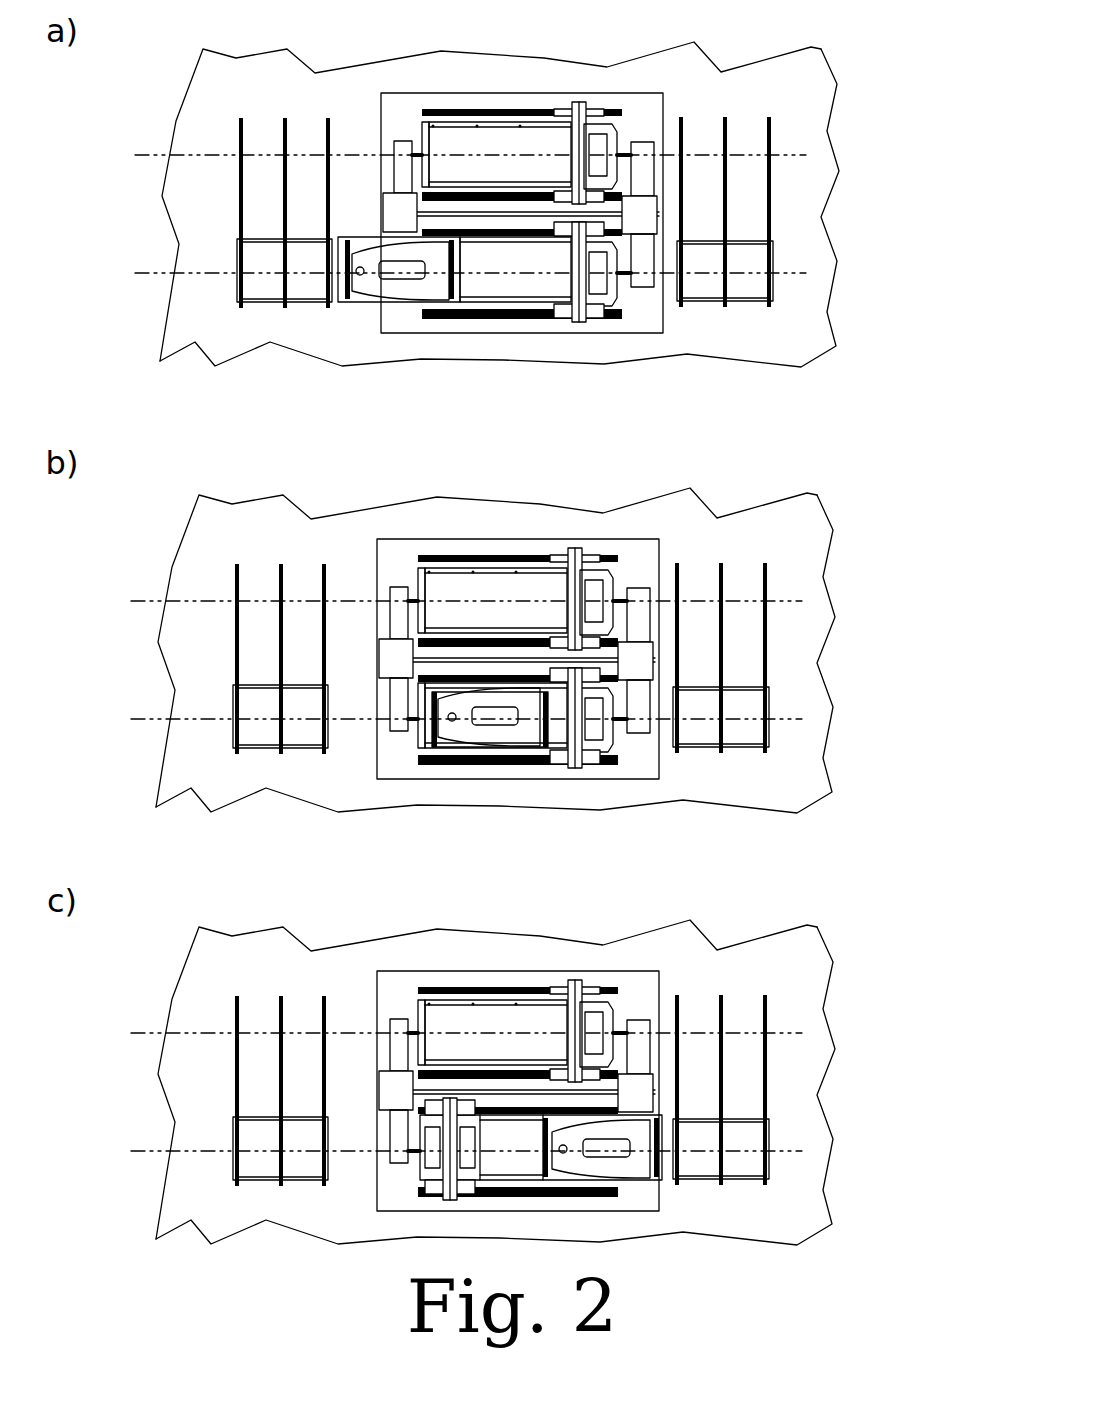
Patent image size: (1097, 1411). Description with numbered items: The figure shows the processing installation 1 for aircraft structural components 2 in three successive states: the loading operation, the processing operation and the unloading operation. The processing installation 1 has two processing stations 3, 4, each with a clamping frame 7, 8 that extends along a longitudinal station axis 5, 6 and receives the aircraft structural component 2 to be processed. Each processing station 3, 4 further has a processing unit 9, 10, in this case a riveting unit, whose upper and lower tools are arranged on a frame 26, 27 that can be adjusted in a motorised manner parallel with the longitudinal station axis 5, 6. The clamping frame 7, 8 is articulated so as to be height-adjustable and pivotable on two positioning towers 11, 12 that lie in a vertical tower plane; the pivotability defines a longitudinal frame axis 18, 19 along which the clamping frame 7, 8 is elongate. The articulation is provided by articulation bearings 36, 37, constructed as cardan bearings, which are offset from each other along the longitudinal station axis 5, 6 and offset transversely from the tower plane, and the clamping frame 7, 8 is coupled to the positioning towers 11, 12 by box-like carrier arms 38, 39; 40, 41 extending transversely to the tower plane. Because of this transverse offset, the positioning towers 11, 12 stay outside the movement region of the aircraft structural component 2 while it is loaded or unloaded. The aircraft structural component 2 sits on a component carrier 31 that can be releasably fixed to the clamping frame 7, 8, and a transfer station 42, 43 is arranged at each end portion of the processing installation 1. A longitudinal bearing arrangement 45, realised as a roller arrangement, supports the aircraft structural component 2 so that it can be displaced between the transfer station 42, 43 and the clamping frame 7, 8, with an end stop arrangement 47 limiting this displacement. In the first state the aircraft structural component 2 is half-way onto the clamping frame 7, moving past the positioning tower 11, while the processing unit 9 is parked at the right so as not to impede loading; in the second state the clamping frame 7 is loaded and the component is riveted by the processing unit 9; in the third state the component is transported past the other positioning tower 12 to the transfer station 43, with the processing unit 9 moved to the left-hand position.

The processing installation 1 is at (900, 479).
The aircraft structural component 2 is at (371, 736).
The processing station 3 is at (905, 677).
The processing station 4 is at (905, 563).
The longitudinal station axis 5 is at (62, 719).
The longitudinal station axis 6 is at (64, 601).
The clamping frame 7 is at (640, 727).
The clamping frame 8 is at (621, 580).
The processing unit 9 is at (575, 778).
The processing unit 10 is at (581, 538).
The positioning tower 11 is at (389, 655).
The positioning tower 12 is at (647, 655).
The longitudinal frame axis 18 is at (509, 716).
The longitudinal frame axis 19 is at (441, 601).
The frame 26 is at (615, 742).
The frame 27 is at (553, 555).
The component carrier 31 is at (344, 683).
The articulation bearing 36 is at (413, 580).
The articulation bearing 37 is at (641, 592).
The carrier arm 38 is at (396, 730).
The carrier arm 39 is at (818, 794).
The carrier arm 40 is at (399, 615).
The carrier arm 41 is at (717, 518).
The transfer station 42 is at (263, 747).
The transfer station 43 is at (757, 687).
The longitudinal bearing arrangement 45 is at (516, 558).
The end stop arrangement 47 is at (540, 556).